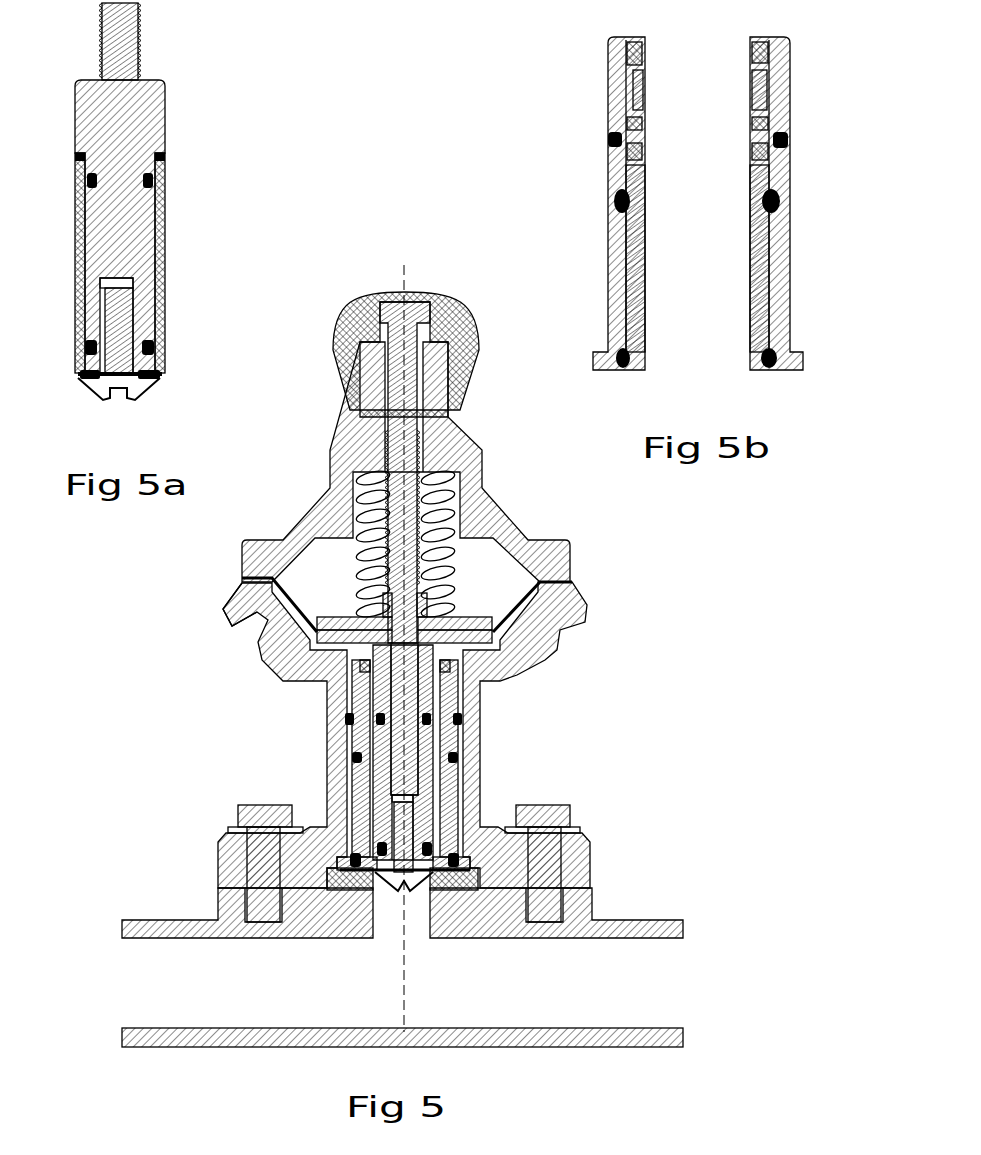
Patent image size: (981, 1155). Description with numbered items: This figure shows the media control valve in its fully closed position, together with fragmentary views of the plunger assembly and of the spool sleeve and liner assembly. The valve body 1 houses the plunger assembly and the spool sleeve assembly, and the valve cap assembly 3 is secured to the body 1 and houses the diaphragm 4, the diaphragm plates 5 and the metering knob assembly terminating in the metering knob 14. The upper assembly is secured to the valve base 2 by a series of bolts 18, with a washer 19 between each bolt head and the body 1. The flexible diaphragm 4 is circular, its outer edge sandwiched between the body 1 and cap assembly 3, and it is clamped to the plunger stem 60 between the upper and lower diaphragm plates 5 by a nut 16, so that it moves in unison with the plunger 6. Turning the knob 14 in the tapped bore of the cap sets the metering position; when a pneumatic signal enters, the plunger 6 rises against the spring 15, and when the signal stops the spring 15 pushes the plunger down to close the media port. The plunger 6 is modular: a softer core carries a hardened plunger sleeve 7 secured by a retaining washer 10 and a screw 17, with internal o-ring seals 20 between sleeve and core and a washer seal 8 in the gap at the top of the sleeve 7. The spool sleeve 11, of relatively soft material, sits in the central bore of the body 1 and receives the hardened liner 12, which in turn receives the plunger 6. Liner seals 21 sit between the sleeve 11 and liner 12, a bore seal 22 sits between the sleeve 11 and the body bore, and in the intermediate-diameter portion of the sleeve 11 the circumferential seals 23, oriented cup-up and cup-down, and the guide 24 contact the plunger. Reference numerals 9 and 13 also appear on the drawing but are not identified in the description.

In FIG. 5, the valve body 1 is at (280, 667).
In FIG. 5, the valve base 2 is at (590, 940).
In FIG. 5, the valve cap assembly 3 is at (503, 518).
In FIG. 5, the diaphragm 4 is at (273, 602).
In FIG. 5, the diaphragm plates 5 is at (477, 617).
In FIG. 5, the plunger 6 is at (403, 756).
In FIG. 5A, the plunger 6 is at (166, 113).
In FIG. 5A, the plunger sleeve 7 is at (75, 198).
In FIG. 5A, the washer seal 8 is at (166, 155).
In FIG. 5A, the bottom seal 9 is at (75, 368).
In FIG. 5A, the retaining washer 10 is at (148, 380).
In FIG. 5B, the spool sleeve 11 is at (592, 352).
In FIG. 5, the liner 12 is at (403, 765).
In FIG. 5B, the liner 12 is at (646, 272).
In FIG. 5, the stem tip 13 is at (430, 889).
In FIG. 5, the metering knob 14 is at (470, 311).
In FIG. 5, the spring 15 is at (357, 562).
In FIG. 5, the nut 16 is at (374, 600).
In FIG. 5A, the screw 17 is at (118, 385).
In FIG. 5, the bolts 18 is at (265, 805).
In FIG. 5, the washer 19 is at (229, 827).
In FIG. 5A, the seal 20 is at (163, 207).
In FIG. 5B, the liner seal 21 is at (787, 350).
In FIG. 5B, the bore seal 22 is at (788, 140).
In FIG. 5B, the circumferential seals 23 is at (640, 48).
In FIG. 5B, the guide 24 is at (645, 90).
In FIG. 5, the plunger stem 60 is at (415, 585).
In FIG. 5A, the plunger stem 60 is at (122, 30).